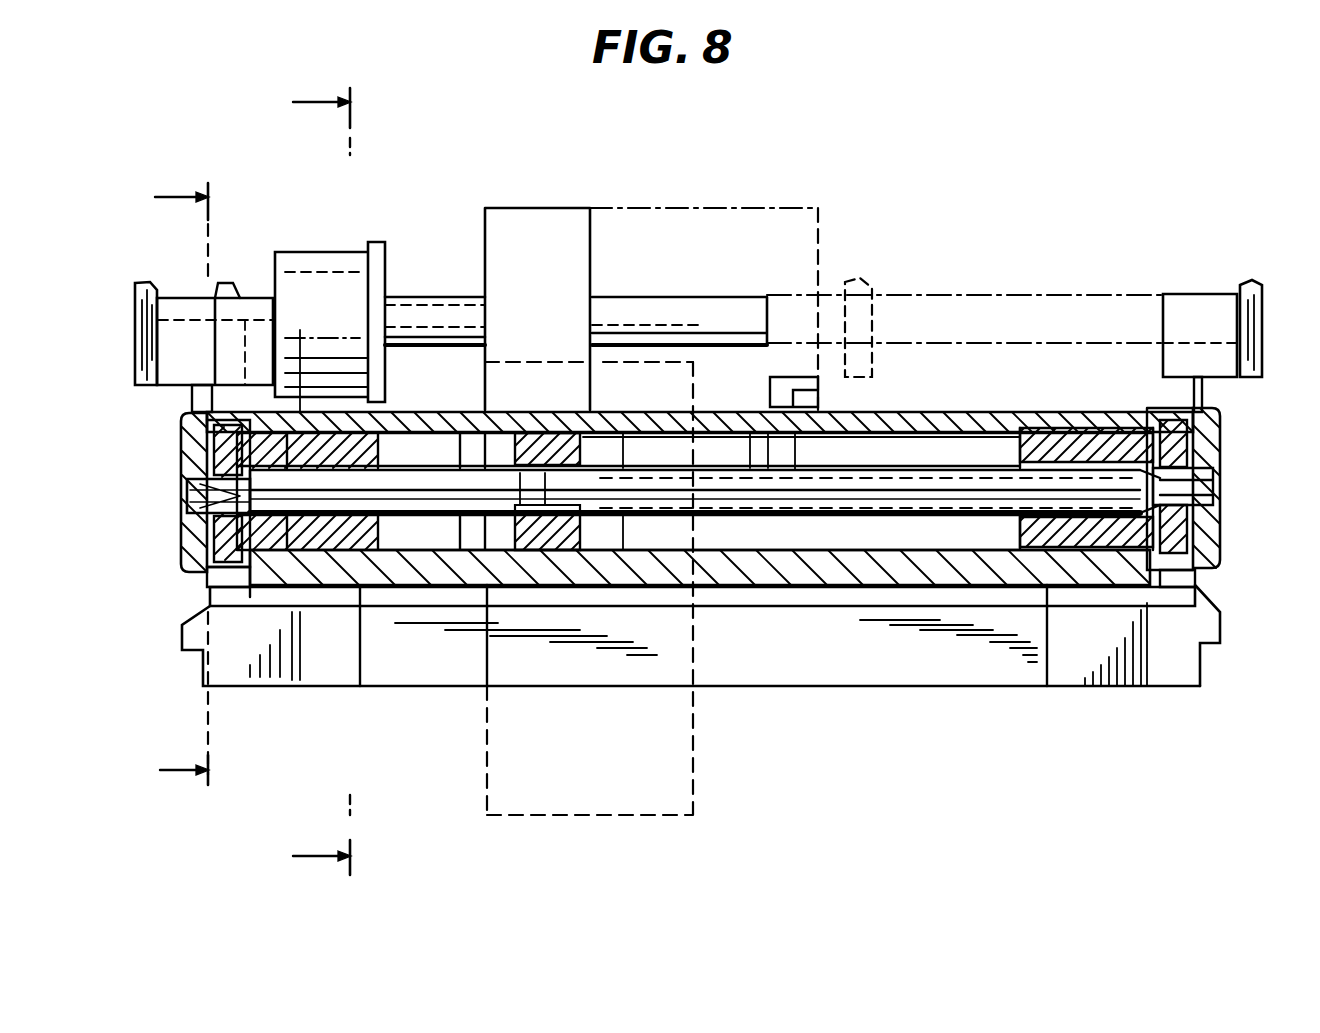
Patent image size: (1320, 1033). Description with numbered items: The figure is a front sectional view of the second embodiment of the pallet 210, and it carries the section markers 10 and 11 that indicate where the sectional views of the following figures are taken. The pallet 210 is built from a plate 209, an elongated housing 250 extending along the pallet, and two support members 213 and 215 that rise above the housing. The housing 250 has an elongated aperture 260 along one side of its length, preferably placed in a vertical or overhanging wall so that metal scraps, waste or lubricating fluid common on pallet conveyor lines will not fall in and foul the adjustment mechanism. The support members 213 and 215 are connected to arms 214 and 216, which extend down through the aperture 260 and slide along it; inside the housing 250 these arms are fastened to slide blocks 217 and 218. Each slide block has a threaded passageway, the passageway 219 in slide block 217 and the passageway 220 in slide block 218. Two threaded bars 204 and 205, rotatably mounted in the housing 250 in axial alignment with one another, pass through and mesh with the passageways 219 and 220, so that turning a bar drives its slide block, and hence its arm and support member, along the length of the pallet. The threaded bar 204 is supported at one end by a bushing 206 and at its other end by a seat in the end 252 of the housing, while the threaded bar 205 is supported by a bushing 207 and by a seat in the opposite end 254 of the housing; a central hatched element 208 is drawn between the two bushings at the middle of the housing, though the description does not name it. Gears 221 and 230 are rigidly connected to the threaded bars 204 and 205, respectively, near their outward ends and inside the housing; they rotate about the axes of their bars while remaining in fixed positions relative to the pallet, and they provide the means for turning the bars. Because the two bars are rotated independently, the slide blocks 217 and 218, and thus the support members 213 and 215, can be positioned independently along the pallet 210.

The section line 10- 10 is at (332, 96).
The section line 11- 11 is at (179, 490).
The threaded bar 204 is at (467, 515).
The threaded bar 205 is at (875, 500).
The bushing 206 is at (516, 515).
The bushing 207 is at (585, 515).
The bearing block 208 is at (567, 390).
The plate 209 is at (1160, 600).
The pallet 210 is at (1015, 731).
The support member 213 is at (220, 283).
The arm 214 is at (386, 396).
The support member 215 is at (1274, 285).
The arm 216 is at (1197, 395).
The slide block 217 is at (290, 595).
The slide block 218 is at (1100, 548).
The threaded passageway 219 is at (187, 483).
The threaded passageway 220 is at (1195, 482).
The gear 221 is at (185, 558).
The gear 230 is at (1208, 572).
The housing 250 is at (1078, 415).
The end of housing 252 is at (182, 530).
The end of housing 254 is at (1213, 525).
The elongated aperture 260 is at (970, 482).